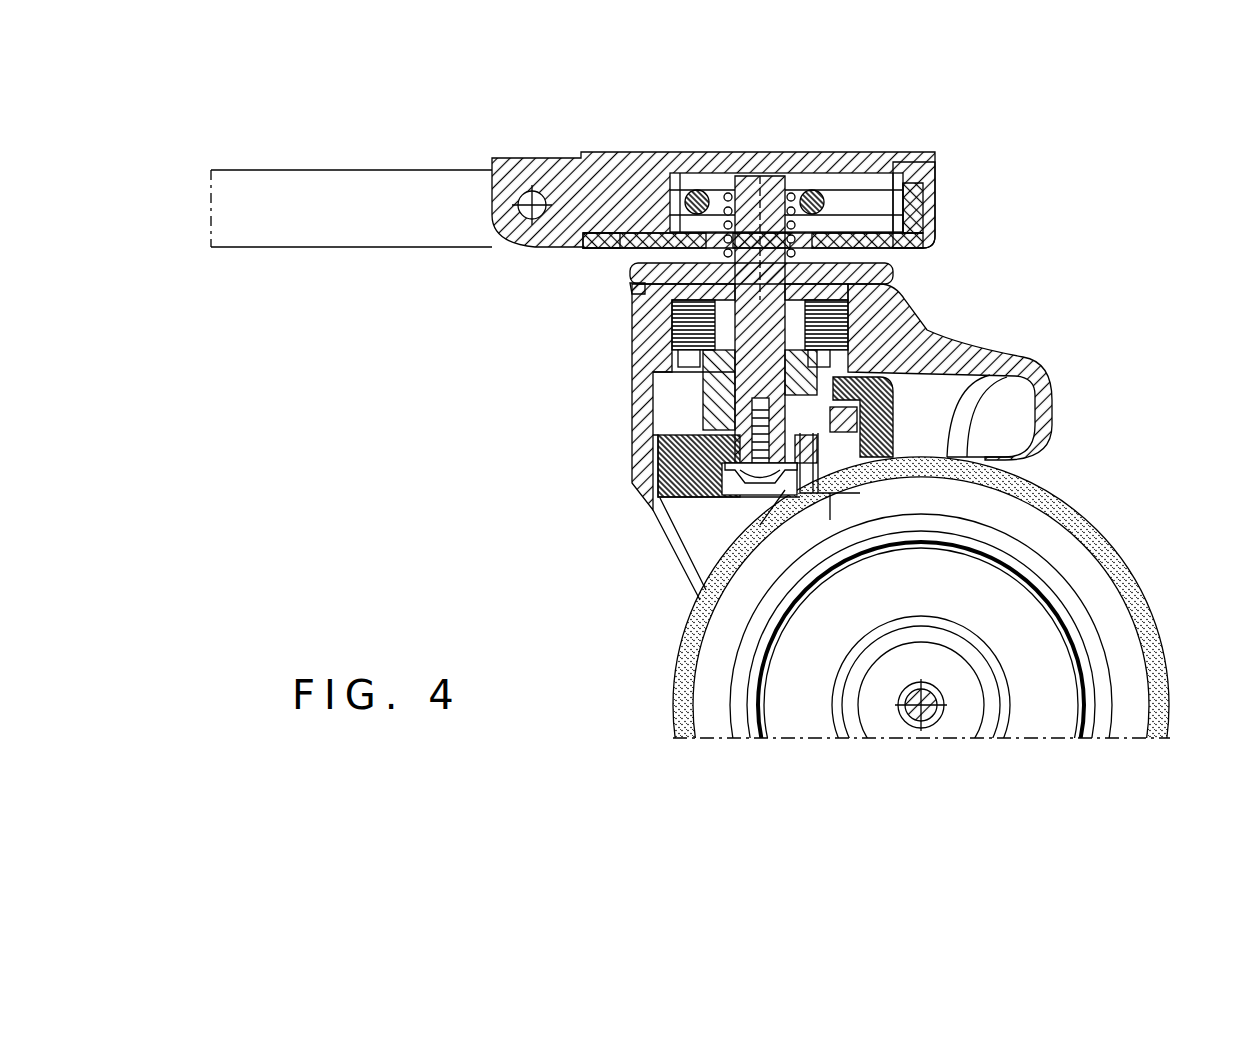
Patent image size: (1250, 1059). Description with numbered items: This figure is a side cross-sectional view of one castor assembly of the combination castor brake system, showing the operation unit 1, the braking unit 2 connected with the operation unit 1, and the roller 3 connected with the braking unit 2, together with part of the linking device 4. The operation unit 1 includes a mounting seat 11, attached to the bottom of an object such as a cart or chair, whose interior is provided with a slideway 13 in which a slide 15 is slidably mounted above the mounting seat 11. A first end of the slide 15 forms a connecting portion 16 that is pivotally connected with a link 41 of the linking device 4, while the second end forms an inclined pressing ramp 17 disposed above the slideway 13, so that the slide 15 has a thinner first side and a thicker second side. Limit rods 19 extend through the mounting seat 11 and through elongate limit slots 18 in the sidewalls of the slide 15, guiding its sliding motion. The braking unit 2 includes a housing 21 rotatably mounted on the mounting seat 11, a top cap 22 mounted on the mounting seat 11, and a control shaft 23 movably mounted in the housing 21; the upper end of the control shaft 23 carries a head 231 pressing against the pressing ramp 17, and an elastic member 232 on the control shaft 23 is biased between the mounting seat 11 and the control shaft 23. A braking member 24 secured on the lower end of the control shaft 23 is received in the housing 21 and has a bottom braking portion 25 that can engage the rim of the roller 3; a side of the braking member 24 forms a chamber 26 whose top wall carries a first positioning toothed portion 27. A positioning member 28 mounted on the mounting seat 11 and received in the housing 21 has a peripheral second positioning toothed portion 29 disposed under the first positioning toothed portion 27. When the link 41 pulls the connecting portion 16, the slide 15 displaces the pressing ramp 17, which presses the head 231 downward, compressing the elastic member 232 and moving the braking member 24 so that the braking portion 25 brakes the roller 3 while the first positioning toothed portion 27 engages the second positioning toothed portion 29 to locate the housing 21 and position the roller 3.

The operation unit 1 is at (1027, 147).
The mounting seat 11 is at (940, 190).
The slideway 13 is at (940, 233).
The slide 15 is at (612, 258).
The connecting portion 16 is at (505, 240).
The pressing ramp 17 is at (805, 165).
The limit slot 18 is at (935, 172).
The limit rod 19 is at (838, 168).
The braking unit 2 is at (515, 540).
The housing 21 is at (632, 468).
The top cap 22 is at (632, 283).
The control shaft 23 is at (700, 380).
The head 231 is at (745, 170).
The elastic member 232 is at (700, 175).
The braking member 24 is at (1010, 370).
The braking portion 25 is at (830, 500).
The chamber 26 is at (1010, 490).
The first positioning toothed portion 27 is at (925, 330).
The positioning member 28 is at (897, 430).
The second positioning toothed portion 29 is at (945, 415).
The roller 3 is at (1118, 627).
The linking device 4 is at (256, 292).
The link 41 is at (330, 222).